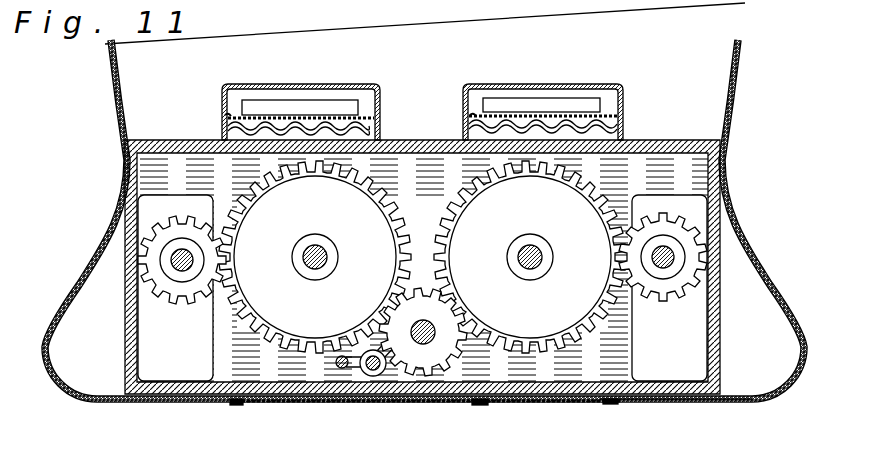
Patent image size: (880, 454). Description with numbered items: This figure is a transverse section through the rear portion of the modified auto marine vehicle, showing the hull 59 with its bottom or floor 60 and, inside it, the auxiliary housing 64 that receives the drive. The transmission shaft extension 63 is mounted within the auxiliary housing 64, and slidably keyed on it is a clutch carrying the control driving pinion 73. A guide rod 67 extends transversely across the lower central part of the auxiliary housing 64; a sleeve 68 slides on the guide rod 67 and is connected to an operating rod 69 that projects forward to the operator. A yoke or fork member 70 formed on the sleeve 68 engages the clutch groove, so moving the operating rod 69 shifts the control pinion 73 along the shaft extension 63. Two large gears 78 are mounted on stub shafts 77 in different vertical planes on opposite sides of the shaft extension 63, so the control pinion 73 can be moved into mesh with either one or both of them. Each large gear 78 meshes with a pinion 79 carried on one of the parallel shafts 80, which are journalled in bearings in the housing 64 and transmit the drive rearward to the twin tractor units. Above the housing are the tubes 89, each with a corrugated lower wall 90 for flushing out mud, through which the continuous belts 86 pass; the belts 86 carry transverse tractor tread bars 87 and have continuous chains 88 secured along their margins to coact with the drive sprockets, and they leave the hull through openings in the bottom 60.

The auto marine vehicle hull 59 is at (92, 268).
The bottom or floor 60 is at (735, 395).
The transmission shaft extension 63 is at (429, 330).
The auxiliary housing 64 is at (127, 340).
The guide rod 67 is at (374, 368).
The sleeve 68 is at (391, 358).
The operating rod 69 is at (341, 364).
The yoke or fork member 70 is at (427, 358).
The control driving pinion 73 is at (481, 404).
The stub shafts 77 is at (316, 255).
The large gears 78 is at (422, 257).
The pinions 79 is at (172, 228).
The parallel shafts 80 is at (187, 262).
The continuous belt 86 is at (298, 120).
The tractor tread bars 87 is at (266, 104).
The continuous chains 88 is at (231, 117).
The chute or tube 89 is at (368, 86).
The lower wall 90 is at (264, 128).